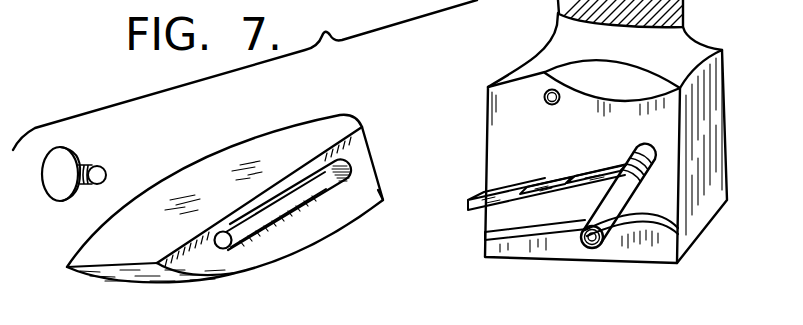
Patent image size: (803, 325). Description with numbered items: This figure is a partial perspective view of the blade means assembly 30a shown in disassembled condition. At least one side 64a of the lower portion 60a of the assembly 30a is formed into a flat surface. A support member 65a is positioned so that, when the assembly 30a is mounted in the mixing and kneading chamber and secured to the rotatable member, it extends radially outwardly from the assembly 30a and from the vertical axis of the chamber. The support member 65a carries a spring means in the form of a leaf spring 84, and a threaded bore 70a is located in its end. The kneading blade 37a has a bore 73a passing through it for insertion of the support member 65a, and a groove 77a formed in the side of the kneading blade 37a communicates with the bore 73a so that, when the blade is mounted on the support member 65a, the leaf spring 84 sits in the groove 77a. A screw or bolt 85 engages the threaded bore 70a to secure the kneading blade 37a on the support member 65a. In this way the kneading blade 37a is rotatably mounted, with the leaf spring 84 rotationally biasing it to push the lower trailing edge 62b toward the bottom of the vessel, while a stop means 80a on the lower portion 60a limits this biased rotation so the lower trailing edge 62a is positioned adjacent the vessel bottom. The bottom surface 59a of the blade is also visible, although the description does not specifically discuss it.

The assembly 30a is at (669, 32).
The kneading blade 37a is at (291, 140).
The bottom surface of wedge 59a is at (150, 279).
The lower portion 60a is at (706, 104).
The lower trailing edge 62a is at (100, 271).
The lower trailing edge 62b is at (385, 202).
The side 64a is at (669, 202).
The support member 65a is at (617, 230).
The threaded bore 70a is at (595, 247).
The bore 73a is at (231, 252).
The groove 77a is at (297, 232).
The stop means 80a is at (485, 233).
The leaf spring 84 is at (537, 176).
The screw or bolt 85 is at (58, 197).